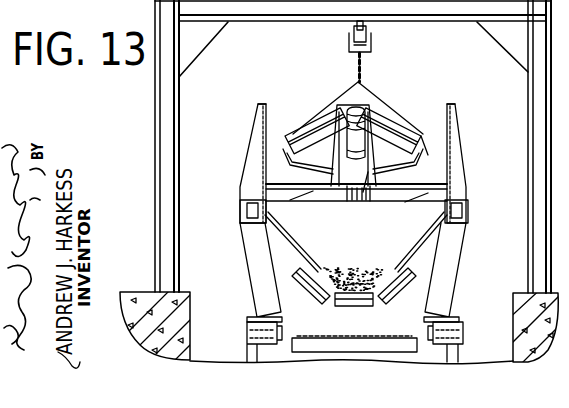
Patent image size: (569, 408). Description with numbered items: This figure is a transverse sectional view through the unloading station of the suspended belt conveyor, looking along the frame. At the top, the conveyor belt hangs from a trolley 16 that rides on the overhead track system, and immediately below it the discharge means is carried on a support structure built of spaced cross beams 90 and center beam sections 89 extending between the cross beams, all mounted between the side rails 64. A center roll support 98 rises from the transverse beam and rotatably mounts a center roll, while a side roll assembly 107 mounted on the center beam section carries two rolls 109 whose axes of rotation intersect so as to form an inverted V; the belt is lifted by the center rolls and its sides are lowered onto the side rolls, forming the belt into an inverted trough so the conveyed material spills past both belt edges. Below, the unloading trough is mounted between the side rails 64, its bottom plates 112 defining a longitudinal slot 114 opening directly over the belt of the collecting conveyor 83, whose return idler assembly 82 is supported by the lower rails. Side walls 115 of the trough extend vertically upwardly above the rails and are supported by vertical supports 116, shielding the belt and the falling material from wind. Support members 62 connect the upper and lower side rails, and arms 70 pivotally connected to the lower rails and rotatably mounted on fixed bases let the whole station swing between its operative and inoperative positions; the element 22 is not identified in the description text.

The trolley 16 is at (347, 42).
The suspension beam 22 is at (366, 22).
The support member 62 is at (261, 285).
The side rail 64 is at (248, 209).
The arm 70 is at (253, 345).
The return idler assembly 82 is at (323, 349).
The collecting conveyor 83 is at (408, 292).
The center beam section 89 is at (348, 188).
The cross beam 90 is at (283, 190).
The center roll support 98 is at (368, 172).
The side roll assembly 107 is at (428, 160).
The roll 109 is at (316, 128).
The bottom plate 112 is at (285, 250).
The longitudinal slot 114 is at (318, 270).
The side wall 115 is at (266, 128).
The vertical support 116 is at (253, 148).